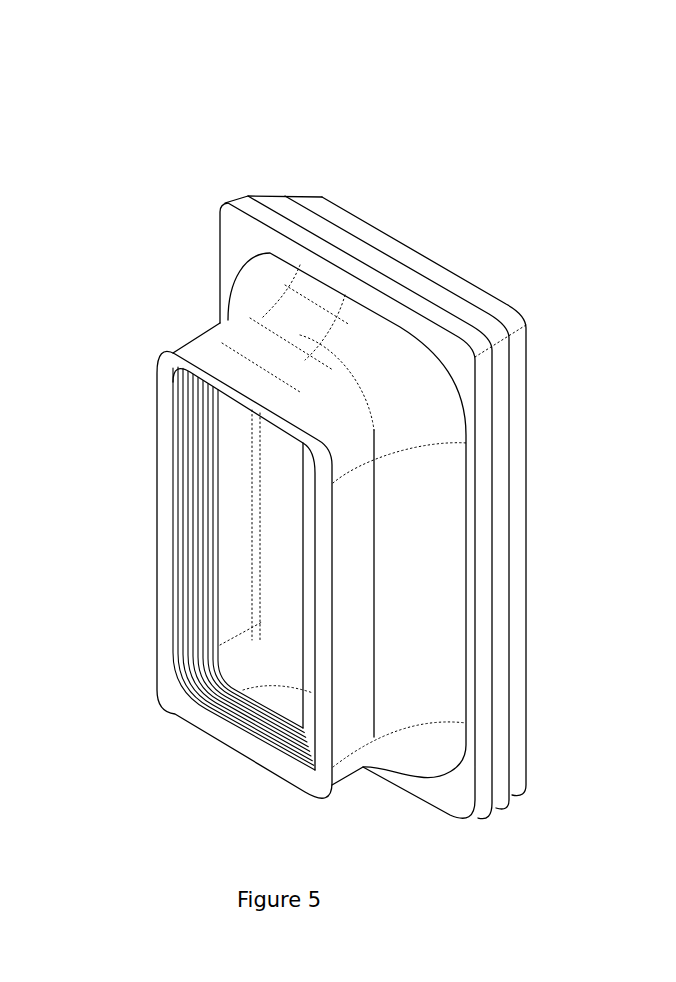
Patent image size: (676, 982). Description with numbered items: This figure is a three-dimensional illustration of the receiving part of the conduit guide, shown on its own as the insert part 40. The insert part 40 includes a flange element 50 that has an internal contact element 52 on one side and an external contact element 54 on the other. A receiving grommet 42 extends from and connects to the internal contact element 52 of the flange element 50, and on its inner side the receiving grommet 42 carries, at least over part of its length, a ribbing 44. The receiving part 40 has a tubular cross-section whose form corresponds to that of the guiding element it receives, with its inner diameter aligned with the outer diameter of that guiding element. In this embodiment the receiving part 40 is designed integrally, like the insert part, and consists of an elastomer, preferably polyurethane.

The insert part 40 is at (408, 105).
The receiving grommet 42 is at (243, 323).
The ribbing 44 is at (247, 730).
The flange element 50 is at (505, 835).
The internal contact element 52 is at (482, 800).
The external contact element 54 is at (518, 775).